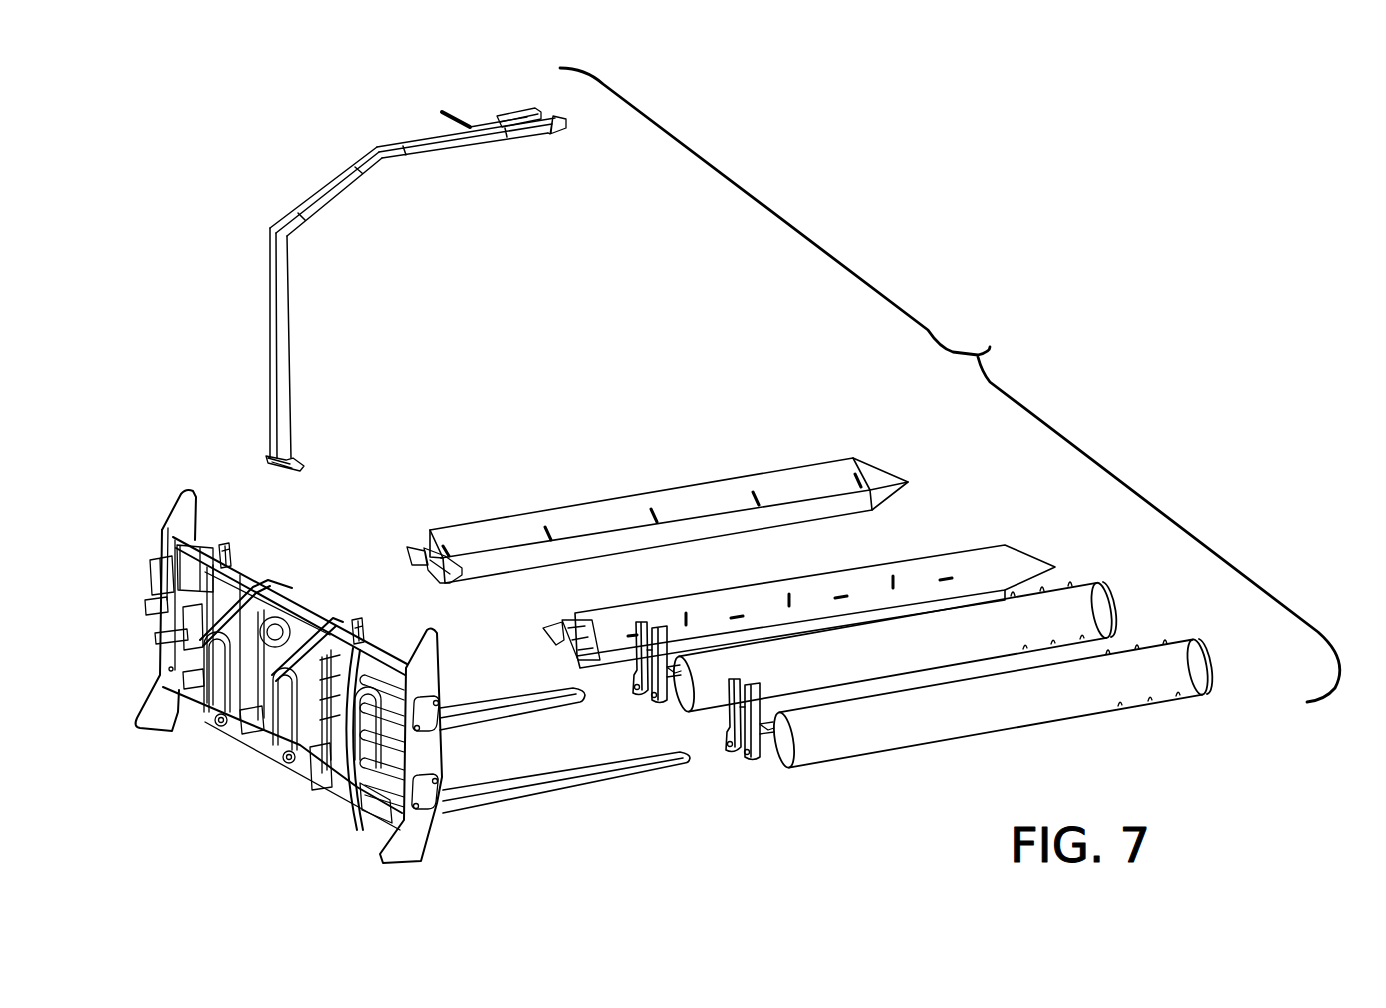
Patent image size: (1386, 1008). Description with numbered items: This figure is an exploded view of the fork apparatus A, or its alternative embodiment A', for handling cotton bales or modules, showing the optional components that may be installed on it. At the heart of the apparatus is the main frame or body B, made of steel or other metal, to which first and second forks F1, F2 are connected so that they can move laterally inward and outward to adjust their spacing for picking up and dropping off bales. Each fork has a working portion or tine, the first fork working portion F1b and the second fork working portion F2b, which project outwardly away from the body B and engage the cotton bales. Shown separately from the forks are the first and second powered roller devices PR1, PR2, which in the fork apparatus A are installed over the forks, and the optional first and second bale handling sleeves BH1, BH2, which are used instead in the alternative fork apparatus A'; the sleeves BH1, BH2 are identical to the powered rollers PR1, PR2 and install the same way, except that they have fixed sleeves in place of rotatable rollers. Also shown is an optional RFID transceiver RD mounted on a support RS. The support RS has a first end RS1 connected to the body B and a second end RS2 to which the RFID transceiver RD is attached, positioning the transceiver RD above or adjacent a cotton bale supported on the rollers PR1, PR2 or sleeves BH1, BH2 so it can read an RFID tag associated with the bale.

The fork apparatus A is at (950, 385).
The fork apparatus A' is at (950, 385).
The body B is at (173, 502).
The support RS is at (416, 266).
The first end RS1 is at (289, 428).
The second end RS2 is at (497, 130).
The RFID transceiver RD is at (502, 112).
The first bale handling sleeve BH1 is at (883, 468).
The second bale handling sleeve BH2 is at (1008, 545).
The first powered roller device PR1 is at (1115, 605).
The second powered roller device PR2 is at (1215, 665).
The first fork F1 is at (526, 686).
The first fork working portion F1b is at (537, 708).
The second fork F2 is at (566, 818).
The second fork working portion F2b is at (604, 781).